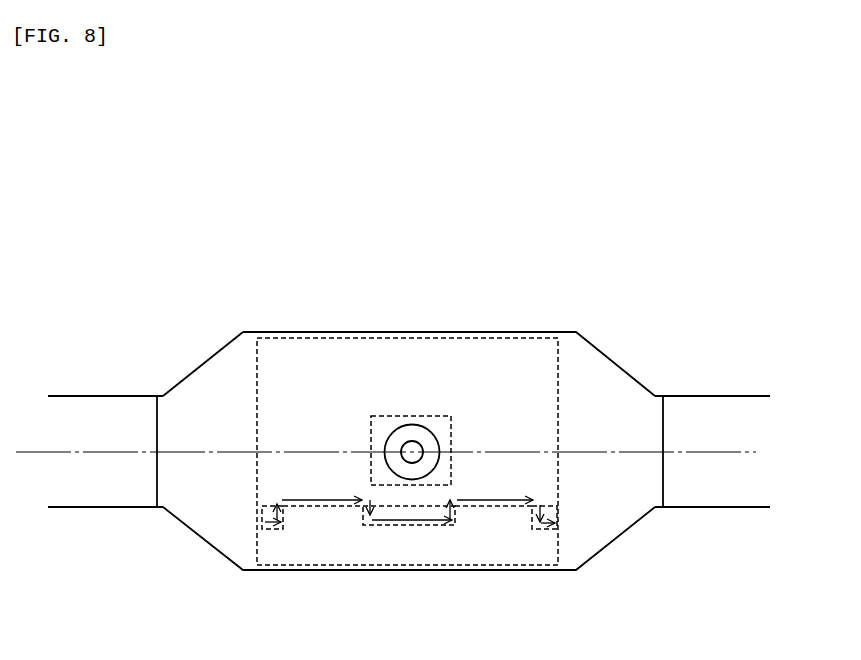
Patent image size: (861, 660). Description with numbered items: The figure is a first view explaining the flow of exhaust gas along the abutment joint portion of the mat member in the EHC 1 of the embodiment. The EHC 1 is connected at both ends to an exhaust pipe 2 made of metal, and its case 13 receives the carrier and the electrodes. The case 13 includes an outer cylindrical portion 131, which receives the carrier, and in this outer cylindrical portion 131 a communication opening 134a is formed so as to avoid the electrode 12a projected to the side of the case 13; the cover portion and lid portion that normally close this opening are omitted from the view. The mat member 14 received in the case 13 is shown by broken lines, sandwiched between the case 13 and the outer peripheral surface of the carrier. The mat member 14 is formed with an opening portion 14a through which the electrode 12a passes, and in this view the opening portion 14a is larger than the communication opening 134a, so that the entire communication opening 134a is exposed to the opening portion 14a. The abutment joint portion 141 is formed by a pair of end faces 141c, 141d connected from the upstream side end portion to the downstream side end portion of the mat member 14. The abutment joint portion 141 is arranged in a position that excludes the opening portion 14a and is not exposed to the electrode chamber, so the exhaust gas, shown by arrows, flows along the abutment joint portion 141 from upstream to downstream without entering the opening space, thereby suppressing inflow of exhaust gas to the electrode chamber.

The EHC 1 is at (658, 248).
The exhaust pipe 2 is at (88, 395).
The case 13 is at (181, 303).
The outer cylindrical portion 131 is at (228, 355).
The mat member 14 is at (303, 549).
The opening portion 14a is at (440, 424).
The electrode 12a is at (411, 446).
The communication opening 134a is at (397, 464).
The abutment joint portion 141 is at (262, 524).
The end face 141c is at (266, 530).
The end face 141d is at (262, 521).